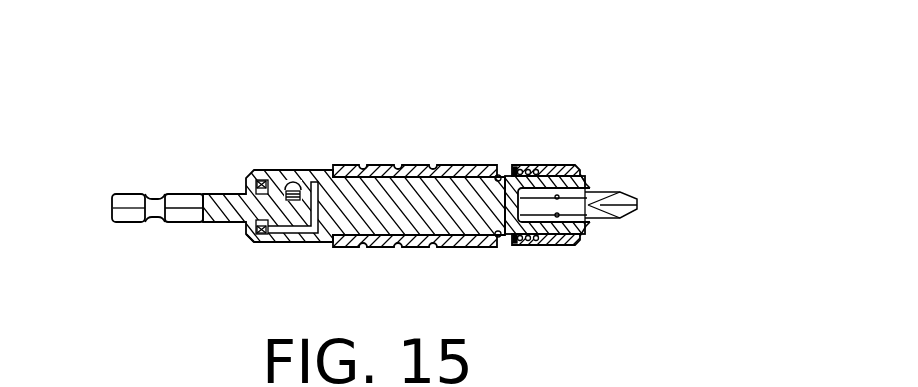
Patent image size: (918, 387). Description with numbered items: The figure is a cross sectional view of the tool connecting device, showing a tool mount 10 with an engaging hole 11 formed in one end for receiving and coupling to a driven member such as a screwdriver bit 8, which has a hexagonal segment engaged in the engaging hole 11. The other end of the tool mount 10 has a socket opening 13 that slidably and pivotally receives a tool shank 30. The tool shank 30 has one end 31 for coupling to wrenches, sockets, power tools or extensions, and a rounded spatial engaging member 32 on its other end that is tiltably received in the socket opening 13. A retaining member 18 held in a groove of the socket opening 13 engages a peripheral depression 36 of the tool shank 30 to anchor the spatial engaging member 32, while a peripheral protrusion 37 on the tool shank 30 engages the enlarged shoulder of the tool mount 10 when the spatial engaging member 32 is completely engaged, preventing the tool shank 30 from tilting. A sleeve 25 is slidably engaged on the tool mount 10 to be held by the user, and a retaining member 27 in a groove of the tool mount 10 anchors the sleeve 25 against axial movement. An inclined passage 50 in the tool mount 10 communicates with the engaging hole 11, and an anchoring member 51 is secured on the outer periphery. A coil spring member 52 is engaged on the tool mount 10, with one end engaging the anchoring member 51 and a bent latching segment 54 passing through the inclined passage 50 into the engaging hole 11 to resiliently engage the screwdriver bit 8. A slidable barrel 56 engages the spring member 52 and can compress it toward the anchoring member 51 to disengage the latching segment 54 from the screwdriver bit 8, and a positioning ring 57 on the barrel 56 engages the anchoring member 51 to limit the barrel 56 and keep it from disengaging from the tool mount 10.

The screwdriver bit 8 is at (604, 194).
The tool mount 10 is at (376, 190).
The engaging hole 11 is at (588, 186).
The socket opening 13 is at (262, 178).
The retaining member 18 is at (260, 236).
The sleeve 25 is at (417, 248).
The retaining member 27 is at (497, 174).
The tool shank 30 is at (186, 200).
The one end 31 is at (118, 200).
The spatial engaging member 32 is at (299, 234).
The peripheral depression 36 is at (275, 178).
The peripheral protrusion 37 is at (246, 230).
The inclined passage 50 is at (552, 246).
The anchoring member 51 is at (522, 169).
The spring member 52 is at (543, 166).
The latching segment 54 is at (580, 244).
The barrel 56 is at (530, 246).
The positioning ring 57 is at (512, 246).